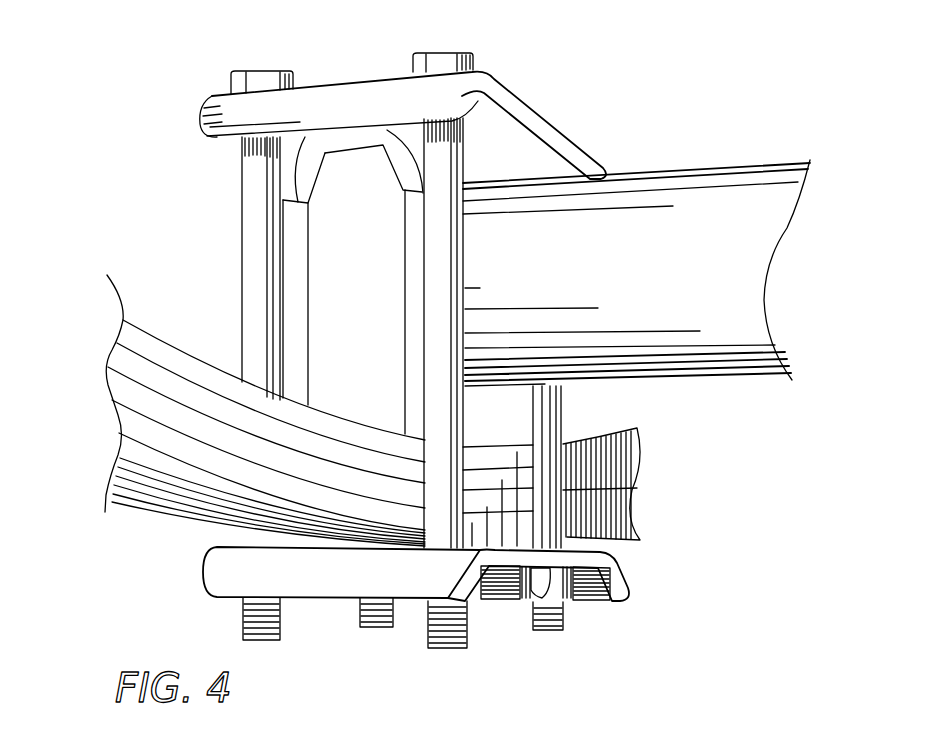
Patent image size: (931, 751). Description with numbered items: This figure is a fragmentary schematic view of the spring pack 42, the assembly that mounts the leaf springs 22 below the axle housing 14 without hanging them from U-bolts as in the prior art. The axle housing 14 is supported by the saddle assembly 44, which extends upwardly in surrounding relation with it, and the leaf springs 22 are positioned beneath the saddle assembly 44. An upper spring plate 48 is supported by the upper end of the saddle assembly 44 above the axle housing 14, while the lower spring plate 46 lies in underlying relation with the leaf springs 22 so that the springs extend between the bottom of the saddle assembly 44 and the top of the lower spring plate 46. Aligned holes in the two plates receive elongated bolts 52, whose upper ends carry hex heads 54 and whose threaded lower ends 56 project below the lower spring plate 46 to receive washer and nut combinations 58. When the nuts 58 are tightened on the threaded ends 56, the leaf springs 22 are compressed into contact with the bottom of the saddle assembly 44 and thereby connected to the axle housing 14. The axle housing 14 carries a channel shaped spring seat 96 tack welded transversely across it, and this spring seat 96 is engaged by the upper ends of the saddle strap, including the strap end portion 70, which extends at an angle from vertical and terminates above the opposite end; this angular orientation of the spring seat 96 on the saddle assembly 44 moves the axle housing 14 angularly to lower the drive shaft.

The axle housing 14 is at (720, 198).
The leaf springs 22 is at (133, 343).
The spring pack 42 is at (168, 153).
The saddle assembly 44 is at (328, 260).
The lower spring plate 46 is at (215, 570).
The upper spring plate 48 is at (345, 102).
The bolts 52 is at (252, 198).
The hex heads 54 is at (263, 77).
The threaded lower ends 56 is at (243, 613).
The washer and nut combinations 58 is at (473, 587).
The strap end portion 70 is at (363, 210).
The spring seat 96 is at (305, 157).